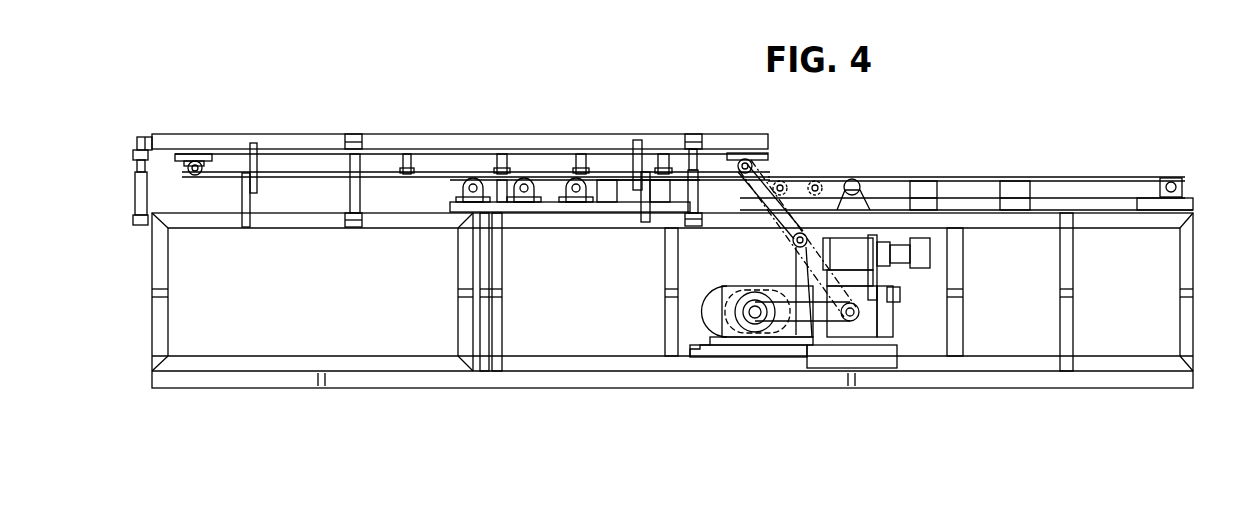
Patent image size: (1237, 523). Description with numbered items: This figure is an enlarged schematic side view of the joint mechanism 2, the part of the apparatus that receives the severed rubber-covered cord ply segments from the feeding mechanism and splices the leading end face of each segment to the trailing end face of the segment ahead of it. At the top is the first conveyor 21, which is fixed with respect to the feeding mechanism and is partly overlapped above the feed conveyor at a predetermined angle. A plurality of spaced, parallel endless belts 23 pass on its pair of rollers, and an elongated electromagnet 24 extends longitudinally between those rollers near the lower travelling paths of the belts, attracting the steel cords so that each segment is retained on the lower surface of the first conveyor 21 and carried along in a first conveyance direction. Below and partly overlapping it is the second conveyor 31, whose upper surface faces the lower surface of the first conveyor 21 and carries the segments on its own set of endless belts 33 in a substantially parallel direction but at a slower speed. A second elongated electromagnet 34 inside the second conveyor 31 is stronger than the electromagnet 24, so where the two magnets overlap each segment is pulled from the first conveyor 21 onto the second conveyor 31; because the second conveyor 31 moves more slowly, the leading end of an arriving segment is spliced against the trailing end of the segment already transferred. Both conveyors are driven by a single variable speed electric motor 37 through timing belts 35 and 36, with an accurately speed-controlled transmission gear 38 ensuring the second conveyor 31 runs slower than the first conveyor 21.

The joint mechanism 2 is at (686, 129).
The first conveyor 21 is at (305, 134).
The endless belts 23 is at (229, 158).
The elongated electromagnet 24 is at (303, 178).
The second conveyor 31 is at (1086, 174).
The endless belts 33 is at (1023, 178).
The elongated electromagnet 34 is at (605, 188).
The timing belt 35 is at (755, 163).
The timing belt 36 is at (800, 276).
The variable speed electric motor 37 is at (868, 326).
The transmission gear 38 is at (727, 297).